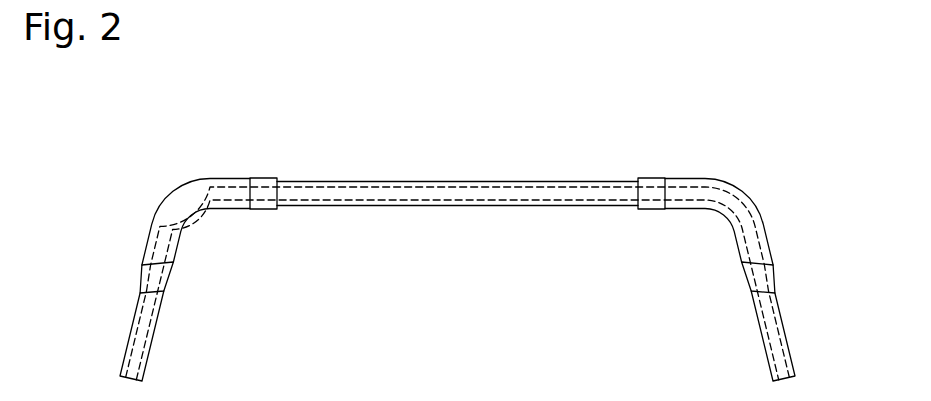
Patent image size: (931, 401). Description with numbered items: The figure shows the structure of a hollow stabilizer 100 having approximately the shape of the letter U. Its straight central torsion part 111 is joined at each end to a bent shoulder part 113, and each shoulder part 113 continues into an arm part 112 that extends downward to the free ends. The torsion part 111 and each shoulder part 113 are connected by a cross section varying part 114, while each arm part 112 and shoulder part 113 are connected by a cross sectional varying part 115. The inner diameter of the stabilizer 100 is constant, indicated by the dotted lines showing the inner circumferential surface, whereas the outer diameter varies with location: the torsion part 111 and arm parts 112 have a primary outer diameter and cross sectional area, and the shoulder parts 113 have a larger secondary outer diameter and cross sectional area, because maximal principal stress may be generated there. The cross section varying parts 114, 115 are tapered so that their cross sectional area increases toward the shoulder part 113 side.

The stabilizer 100 is at (708, 128).
The torsion part 111 is at (435, 182).
The arm part 112 is at (128, 345).
The shoulder part 113 is at (184, 184).
The cross section varying part 114 is at (267, 178).
The cross sectional varying part 115 is at (142, 278).